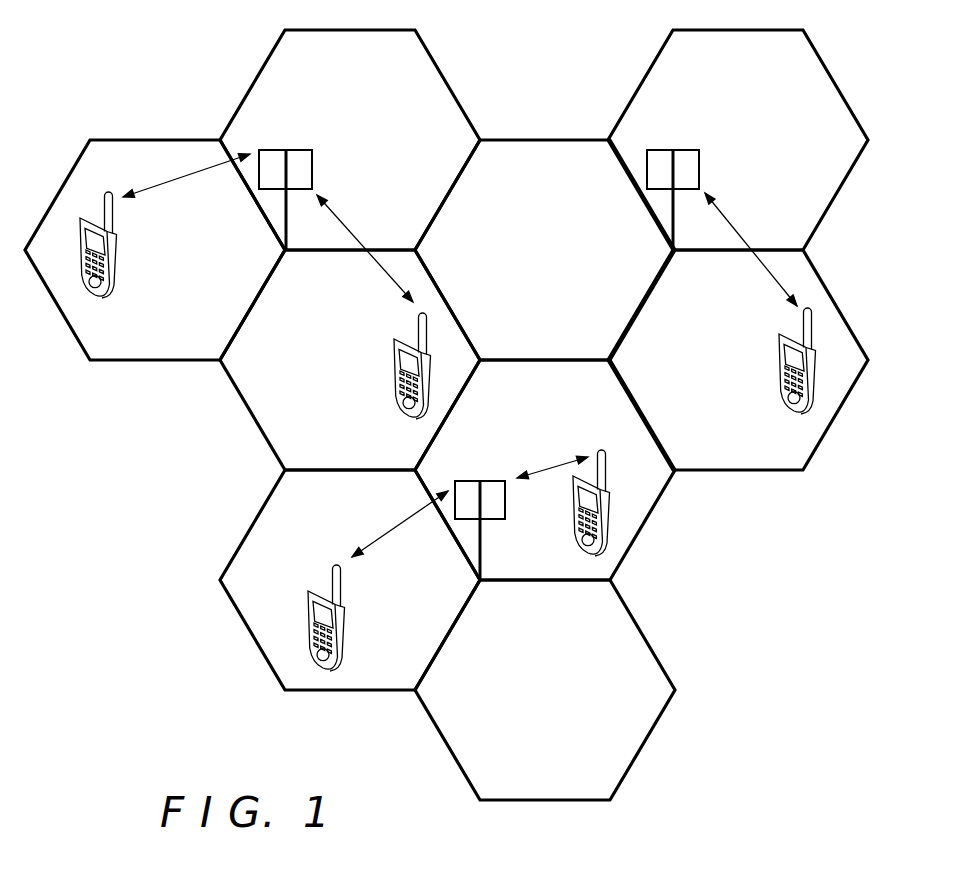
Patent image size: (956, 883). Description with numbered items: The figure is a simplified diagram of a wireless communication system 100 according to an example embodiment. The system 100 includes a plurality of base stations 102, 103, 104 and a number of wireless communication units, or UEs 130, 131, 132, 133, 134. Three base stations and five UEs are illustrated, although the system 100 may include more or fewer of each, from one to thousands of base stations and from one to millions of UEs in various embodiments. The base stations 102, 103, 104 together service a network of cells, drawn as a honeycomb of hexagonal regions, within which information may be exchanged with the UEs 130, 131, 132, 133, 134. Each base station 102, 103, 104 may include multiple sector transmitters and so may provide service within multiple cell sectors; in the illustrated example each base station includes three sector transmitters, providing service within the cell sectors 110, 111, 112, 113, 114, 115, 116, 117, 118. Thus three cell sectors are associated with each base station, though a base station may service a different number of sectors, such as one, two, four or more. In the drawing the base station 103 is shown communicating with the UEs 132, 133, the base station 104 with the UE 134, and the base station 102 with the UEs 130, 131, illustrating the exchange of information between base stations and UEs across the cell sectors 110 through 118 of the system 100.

The wireless communication system 100 is at (174, 72).
The base station 102 is at (492, 481).
The base station 103 is at (300, 150).
The base station 104 is at (688, 150).
The cell sector 110 is at (653, 652).
The cell sector 111 is at (255, 641).
The cell sector 112 is at (246, 408).
The cell sector 113 is at (152, 361).
The cell sector 114 is at (450, 83).
The cell sector 115 is at (533, 139).
The cell sector 116 is at (650, 67).
The cell sector 117 is at (757, 473).
The cell sector 118 is at (641, 519).
The wireless communication unit 130 is at (578, 535).
The wireless communication unit 131 is at (315, 612).
The wireless communication unit 132 is at (397, 393).
The wireless communication unit 133 is at (120, 257).
The wireless communication unit 134 is at (787, 397).